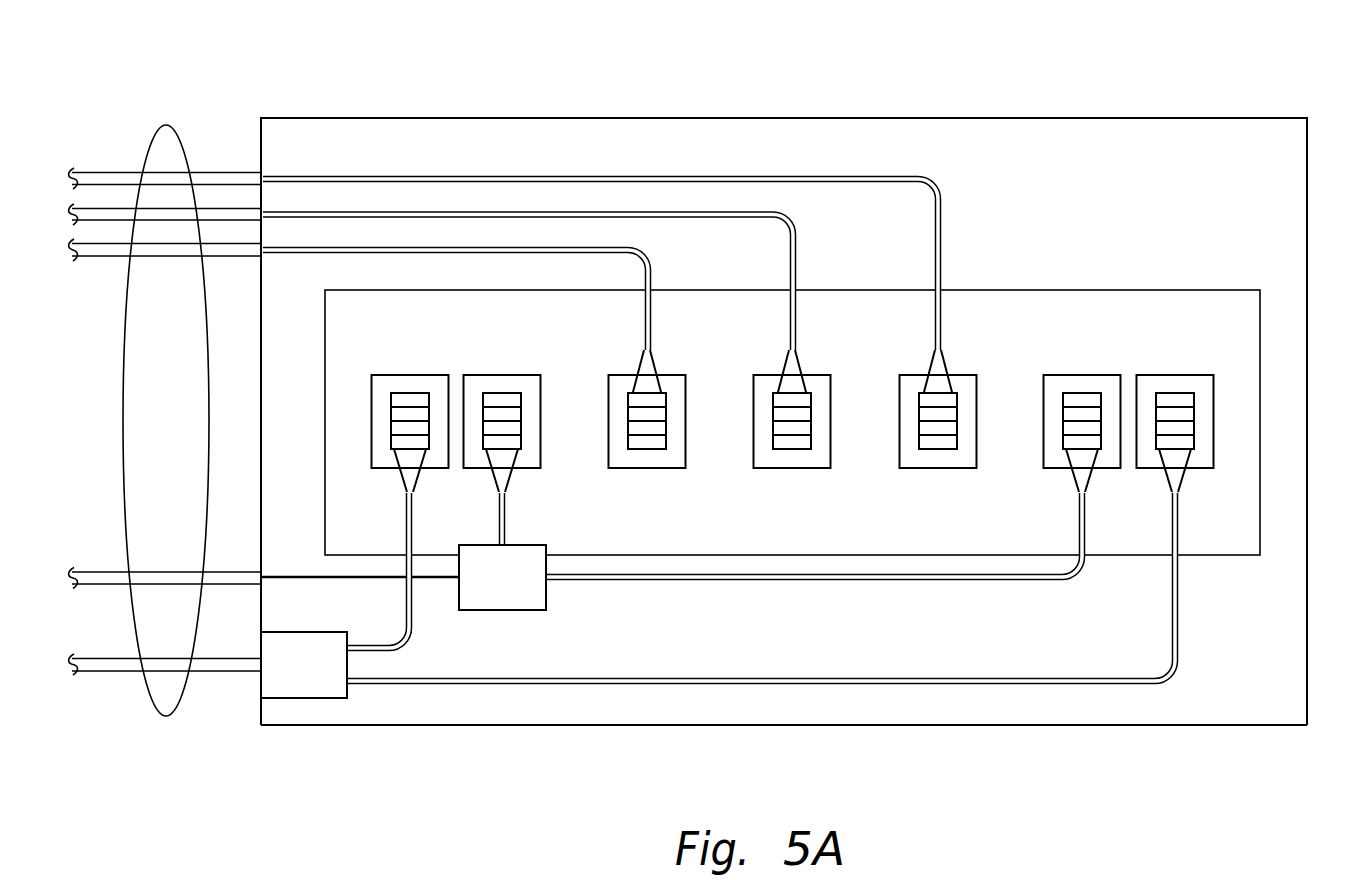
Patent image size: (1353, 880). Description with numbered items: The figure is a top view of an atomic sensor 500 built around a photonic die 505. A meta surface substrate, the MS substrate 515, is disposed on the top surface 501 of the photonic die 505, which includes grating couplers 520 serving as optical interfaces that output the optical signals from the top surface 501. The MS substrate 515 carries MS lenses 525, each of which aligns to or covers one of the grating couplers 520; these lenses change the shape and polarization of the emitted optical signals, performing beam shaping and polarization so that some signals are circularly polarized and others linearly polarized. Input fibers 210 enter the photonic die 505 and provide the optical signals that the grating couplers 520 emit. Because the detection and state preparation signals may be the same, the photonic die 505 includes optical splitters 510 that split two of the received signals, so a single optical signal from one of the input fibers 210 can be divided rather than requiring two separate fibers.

The atomic sensor 500 is at (1020, 73).
The photonic die 505 is at (1098, 725).
The top surface 501 is at (765, 707).
The input fibers 210 is at (164, 126).
The meta surface (MS) substrate 515 is at (1232, 290).
The optical splitter 510 is at (313, 698).
The MS lens 525 is at (1083, 374).
The grating coupler 520 is at (647, 450).